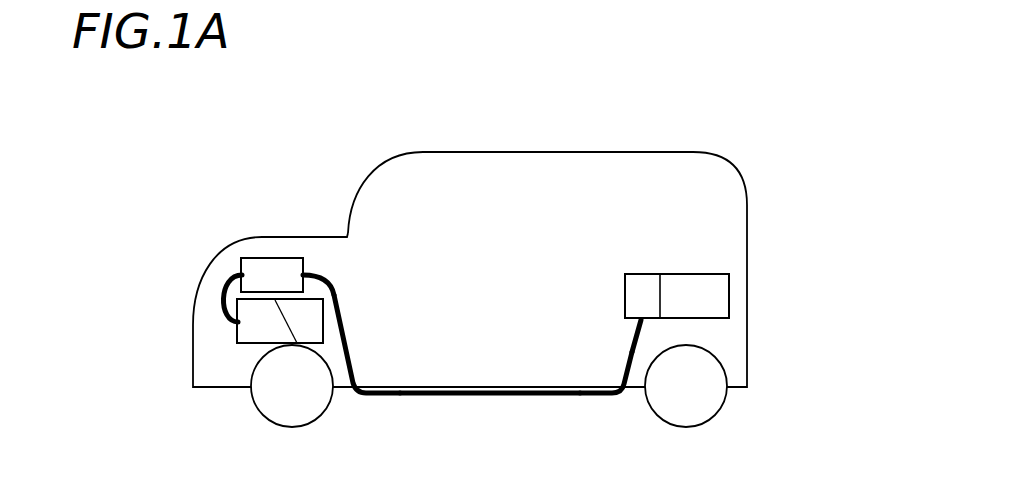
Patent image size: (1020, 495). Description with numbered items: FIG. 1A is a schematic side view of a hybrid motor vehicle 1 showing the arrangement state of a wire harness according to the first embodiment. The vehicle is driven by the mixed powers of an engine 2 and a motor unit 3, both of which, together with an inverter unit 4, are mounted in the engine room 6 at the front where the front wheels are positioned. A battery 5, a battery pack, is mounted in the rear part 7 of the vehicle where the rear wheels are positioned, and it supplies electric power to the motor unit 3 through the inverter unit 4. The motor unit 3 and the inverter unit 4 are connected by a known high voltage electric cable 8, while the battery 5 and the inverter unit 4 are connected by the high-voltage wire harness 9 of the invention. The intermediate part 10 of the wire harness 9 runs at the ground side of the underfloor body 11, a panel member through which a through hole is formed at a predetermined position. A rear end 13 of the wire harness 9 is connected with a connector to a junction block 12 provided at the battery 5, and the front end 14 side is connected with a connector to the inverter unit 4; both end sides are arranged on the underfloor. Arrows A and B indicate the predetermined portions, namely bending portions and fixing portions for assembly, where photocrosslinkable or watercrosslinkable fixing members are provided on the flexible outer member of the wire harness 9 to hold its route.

The hybrid motor vehicle 1 is at (304, 149).
The engine 2 is at (312, 337).
The motor unit 3 is at (248, 337).
The inverter unit 4 is at (263, 272).
The battery 5 is at (710, 293).
The engine room 6 is at (213, 378).
The rear part of vehicle 7 is at (738, 340).
The high voltage electric cable 8 is at (222, 282).
The wire harness 9 is at (491, 405).
The intermediate part 10 is at (392, 398).
The underfloor body 11 is at (585, 390).
The junction block 12 is at (641, 285).
The rear end 13 is at (633, 325).
The front end 14 is at (318, 268).
The arrow A is at (334, 276).
The arrow B is at (437, 406).